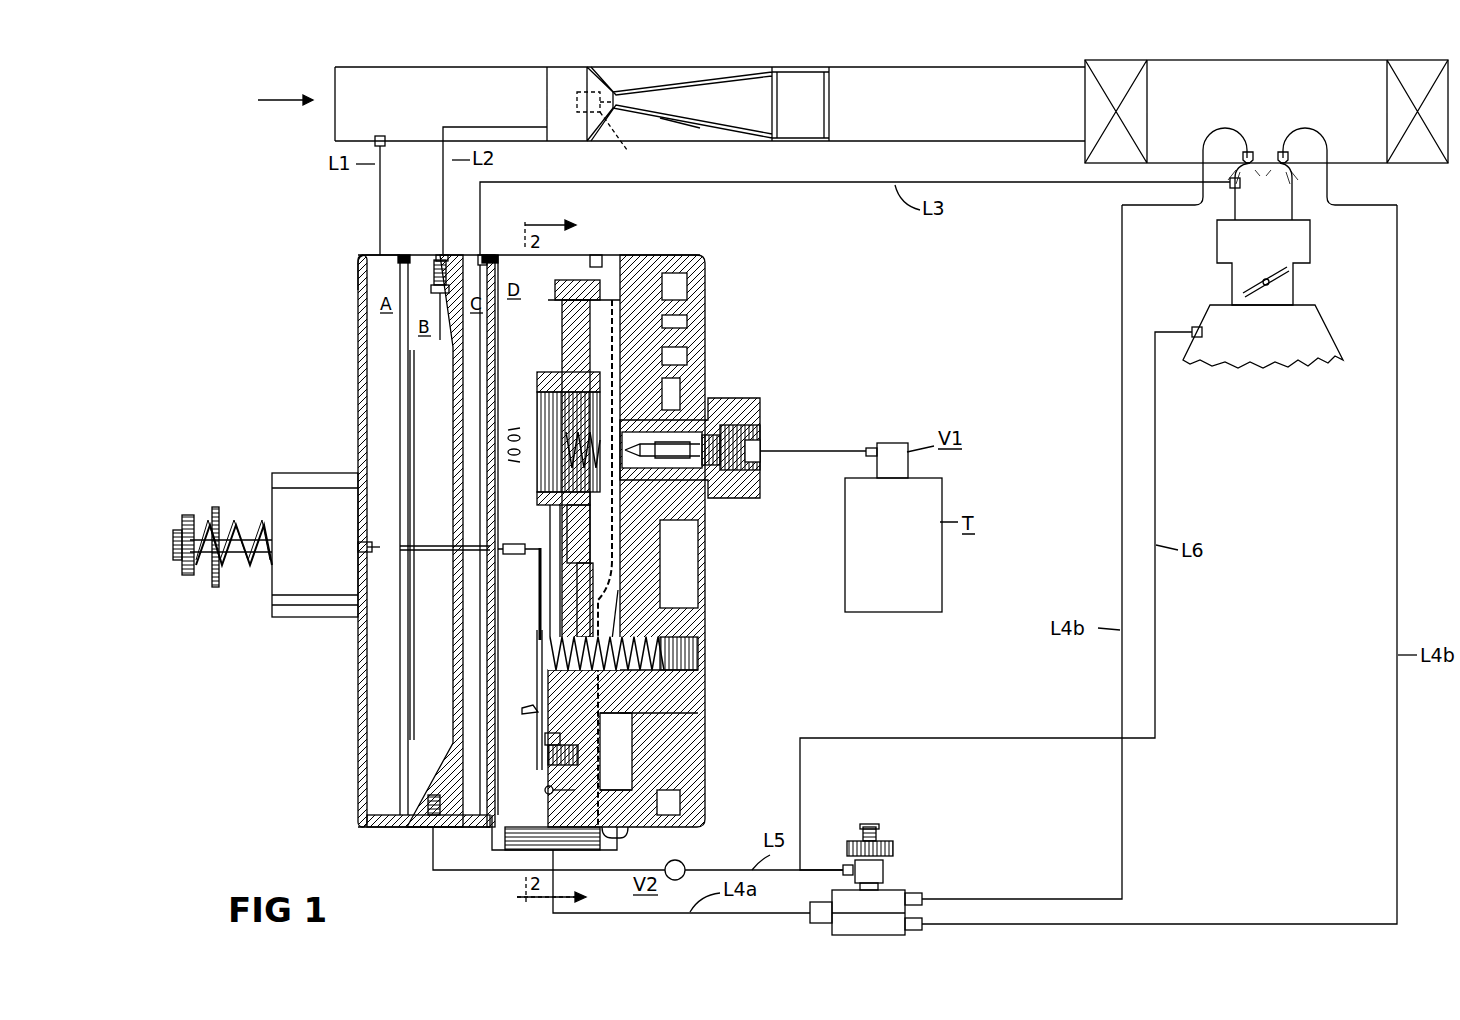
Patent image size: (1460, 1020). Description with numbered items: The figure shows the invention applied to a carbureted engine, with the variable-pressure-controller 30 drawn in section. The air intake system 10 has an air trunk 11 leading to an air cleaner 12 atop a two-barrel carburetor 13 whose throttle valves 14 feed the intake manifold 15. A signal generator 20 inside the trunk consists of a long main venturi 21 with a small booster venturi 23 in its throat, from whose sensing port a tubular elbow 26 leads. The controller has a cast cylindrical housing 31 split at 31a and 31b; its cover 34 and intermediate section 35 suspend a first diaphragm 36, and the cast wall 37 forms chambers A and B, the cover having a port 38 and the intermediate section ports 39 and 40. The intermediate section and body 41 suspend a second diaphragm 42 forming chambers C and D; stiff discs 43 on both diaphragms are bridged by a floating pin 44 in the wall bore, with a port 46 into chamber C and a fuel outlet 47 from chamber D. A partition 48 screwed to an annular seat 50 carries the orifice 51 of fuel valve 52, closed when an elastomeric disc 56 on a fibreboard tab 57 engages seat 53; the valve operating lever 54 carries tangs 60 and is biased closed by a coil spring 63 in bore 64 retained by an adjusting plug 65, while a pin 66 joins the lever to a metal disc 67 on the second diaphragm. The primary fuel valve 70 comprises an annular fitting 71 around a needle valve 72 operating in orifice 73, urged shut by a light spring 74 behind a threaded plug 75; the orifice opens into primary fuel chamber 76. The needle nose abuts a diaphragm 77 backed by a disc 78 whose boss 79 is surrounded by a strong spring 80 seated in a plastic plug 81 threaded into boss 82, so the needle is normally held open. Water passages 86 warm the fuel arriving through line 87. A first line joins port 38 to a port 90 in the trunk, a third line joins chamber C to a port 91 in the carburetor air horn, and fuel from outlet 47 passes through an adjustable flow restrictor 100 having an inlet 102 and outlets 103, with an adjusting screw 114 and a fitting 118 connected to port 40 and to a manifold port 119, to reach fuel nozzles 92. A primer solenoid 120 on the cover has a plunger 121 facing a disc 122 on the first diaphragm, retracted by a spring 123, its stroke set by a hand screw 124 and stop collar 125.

The air intake system 10 is at (430, 103).
The air intake trunk 11 is at (680, 70).
The air cleaner 12 is at (1178, 60).
The two-barrel carburetor 13 is at (1222, 252).
The throttle valves 14 is at (1280, 276).
The intake manifold 15 is at (1320, 330).
The signal generator 20 is at (730, 111).
The main venturi 21 is at (690, 130).
The booster venturi 23 is at (625, 139).
The tubular elbow 26 is at (575, 100).
The variable-pressure-controller 30 is at (238, 370).
The cylindrical housing 31 is at (515, 557).
The housing split line 31a is at (402, 255).
The housing split line 31b is at (486, 255).
The cover 34 is at (356, 345).
The intermediate housing section 35 is at (436, 258).
The first flexible diaphragm 36 is at (410, 400).
The housing wall 37 is at (452, 690).
The port 38 is at (362, 254).
The port 39 is at (440, 255).
The port 40 is at (430, 828).
The body 41 is at (580, 255).
The second flexible diaphragm 42 is at (499, 320).
The stiff discs 43 is at (462, 463).
The floating pin 44 is at (440, 552).
The port 46 is at (485, 257).
The fuel outlet 47 is at (522, 850).
The partition 48 is at (562, 356).
The annular seat 50 is at (604, 258).
The orifice 51 is at (635, 755).
The fuel valve 52 is at (528, 601).
The valve seat 53 is at (545, 788).
The valve operating lever 54 is at (540, 628).
The elastomeric disc 56 is at (545, 738).
The fibreboard tab 57 is at (548, 755).
The upstanding tangs 60 is at (522, 706).
The coil spring 63 is at (640, 690).
The bore 64 is at (612, 592).
The plug 65 is at (700, 663).
The pin 66 is at (518, 543).
The metal disc 67 is at (548, 520).
The primary fuel valve 70 is at (730, 400).
The annular fitting 71 is at (762, 410).
The needle valve 72 is at (670, 460).
The orifice 73 is at (662, 462).
The coil spring 74 is at (706, 470).
The threaded plug 75 is at (762, 440).
The primary fuel chamber 76 is at (690, 580).
The diaphragm 77 is at (687, 320).
The disc 78 is at (687, 354).
The central boss 79 is at (614, 505).
The coil spring 80 is at (520, 463).
The plastic plug 81 is at (540, 430).
The boss 82 is at (540, 405).
The water passages 86 is at (683, 292).
The fuel line 87 is at (840, 450).
The port 90 is at (378, 136).
The port 91 is at (1230, 186).
The fuel nozzles 92 is at (1283, 150).
The adjustable flow restrictor 100 is at (772, 866).
The inlet 102 is at (808, 925).
The outlets 103 is at (925, 893).
The screw 114 is at (875, 824).
The fitting 118 is at (843, 866).
The port 119 is at (1195, 327).
The primer solenoid 120 is at (300, 618).
The plunger 121 is at (362, 535).
The disc 122 is at (360, 585).
The spring 123 is at (248, 572).
The hand screw 124 is at (186, 512).
The stop collar 125 is at (217, 505).